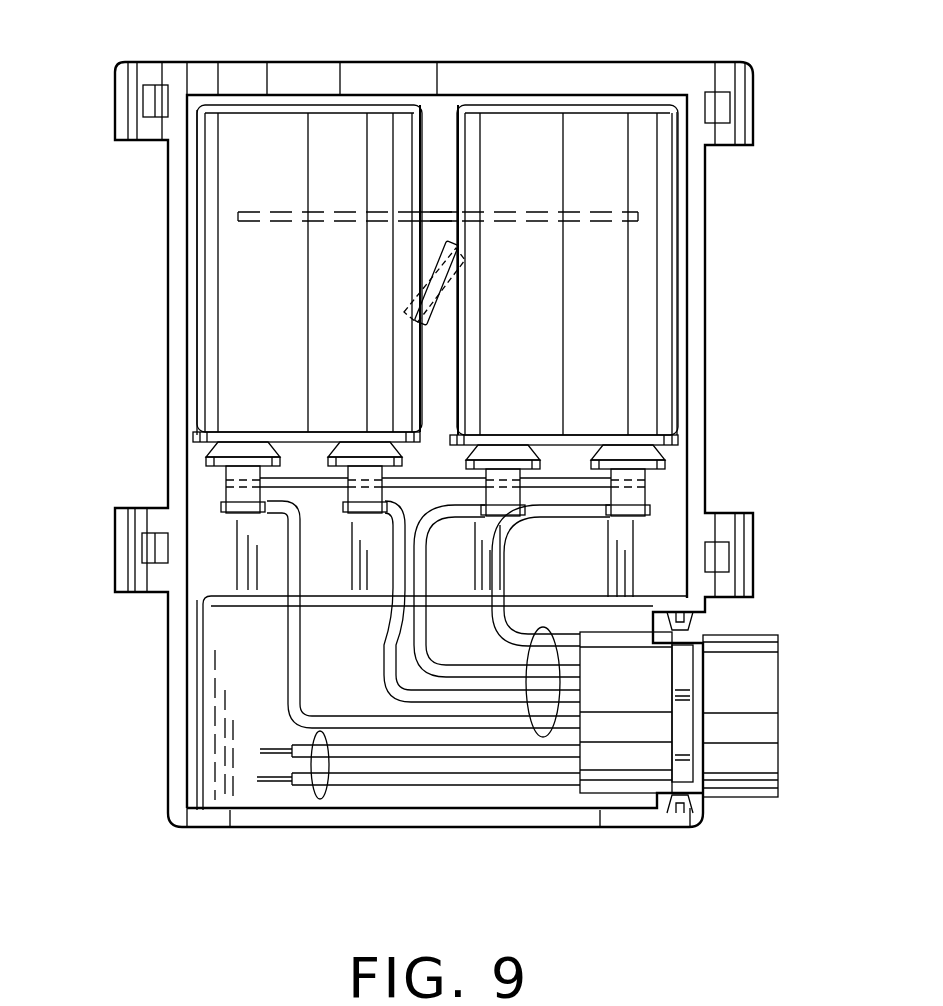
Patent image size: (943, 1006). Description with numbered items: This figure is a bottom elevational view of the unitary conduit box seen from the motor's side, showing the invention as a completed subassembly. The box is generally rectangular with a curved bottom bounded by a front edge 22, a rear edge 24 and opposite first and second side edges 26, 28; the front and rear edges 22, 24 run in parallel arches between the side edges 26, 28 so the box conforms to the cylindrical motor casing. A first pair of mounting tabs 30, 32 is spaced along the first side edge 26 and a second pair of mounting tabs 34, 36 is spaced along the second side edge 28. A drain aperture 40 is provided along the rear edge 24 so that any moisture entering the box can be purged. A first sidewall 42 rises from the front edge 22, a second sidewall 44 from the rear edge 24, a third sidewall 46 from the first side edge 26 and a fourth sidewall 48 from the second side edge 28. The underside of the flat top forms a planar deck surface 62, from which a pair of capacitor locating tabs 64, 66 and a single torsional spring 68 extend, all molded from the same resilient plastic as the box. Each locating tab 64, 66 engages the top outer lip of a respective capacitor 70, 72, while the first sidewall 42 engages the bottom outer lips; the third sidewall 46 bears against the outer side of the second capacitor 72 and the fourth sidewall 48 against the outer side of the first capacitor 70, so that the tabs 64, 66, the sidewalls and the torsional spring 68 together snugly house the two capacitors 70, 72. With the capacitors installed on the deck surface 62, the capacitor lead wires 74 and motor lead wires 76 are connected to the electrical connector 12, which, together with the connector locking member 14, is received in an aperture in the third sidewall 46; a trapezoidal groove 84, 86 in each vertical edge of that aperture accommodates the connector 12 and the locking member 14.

The connector 12 is at (752, 695).
The connector locking member 14 is at (606, 695).
The front edge 22 is at (455, 78).
The rear edge 24 is at (553, 818).
The first side edge 26 is at (700, 310).
The second side edge 28 is at (180, 284).
The mounting tab 30 is at (745, 58).
The mounting tab 32 is at (747, 507).
The mounting tab 34 is at (127, 594).
The mounting tab 36 is at (132, 145).
The drain aperture 40 is at (430, 818).
The first sidewall 42 is at (272, 55).
The second sidewall 44 is at (298, 816).
The third sidewall 46 is at (708, 368).
The fourth sidewall 48 is at (162, 377).
The deck surface 62 is at (423, 373).
The capacitor locating tab 64 is at (303, 470).
The capacitor locating tab 66 is at (583, 470).
The torsional spring 68 is at (437, 280).
The first capacitor 70 is at (243, 311).
The second capacitor 72 is at (500, 311).
The capacitor lead wires 74 is at (550, 627).
The motor lead wires 76 is at (318, 737).
The groove 84 is at (678, 612).
The groove 86 is at (678, 813).